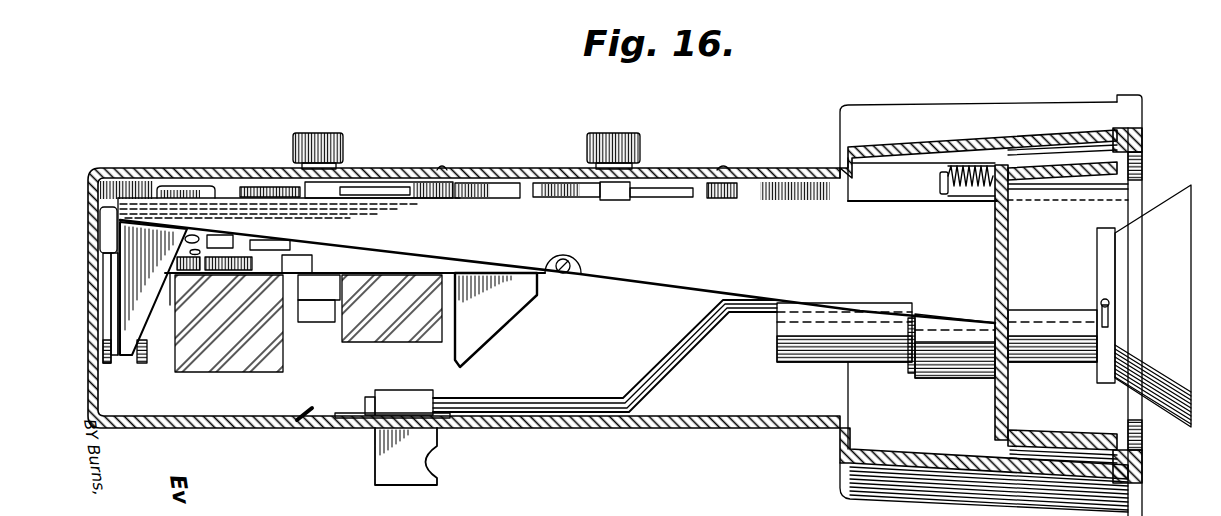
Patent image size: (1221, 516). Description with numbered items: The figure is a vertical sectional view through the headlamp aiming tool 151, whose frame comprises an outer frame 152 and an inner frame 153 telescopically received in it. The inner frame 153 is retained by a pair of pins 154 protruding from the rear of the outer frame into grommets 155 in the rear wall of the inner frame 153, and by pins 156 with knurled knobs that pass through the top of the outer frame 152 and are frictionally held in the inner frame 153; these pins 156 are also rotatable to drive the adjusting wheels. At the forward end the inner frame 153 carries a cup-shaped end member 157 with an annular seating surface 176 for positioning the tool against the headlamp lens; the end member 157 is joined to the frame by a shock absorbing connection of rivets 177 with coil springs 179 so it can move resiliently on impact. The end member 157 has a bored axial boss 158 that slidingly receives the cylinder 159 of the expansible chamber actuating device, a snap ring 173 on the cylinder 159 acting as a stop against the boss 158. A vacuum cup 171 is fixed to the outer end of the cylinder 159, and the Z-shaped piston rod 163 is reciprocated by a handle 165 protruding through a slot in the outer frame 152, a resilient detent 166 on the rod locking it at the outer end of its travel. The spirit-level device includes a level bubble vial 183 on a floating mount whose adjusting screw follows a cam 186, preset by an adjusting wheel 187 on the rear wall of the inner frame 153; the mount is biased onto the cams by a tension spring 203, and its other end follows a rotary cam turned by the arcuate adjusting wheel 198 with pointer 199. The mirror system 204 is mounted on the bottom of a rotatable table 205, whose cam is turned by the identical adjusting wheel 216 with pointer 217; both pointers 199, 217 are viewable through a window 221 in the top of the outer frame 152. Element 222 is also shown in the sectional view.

The headlamp aiming tool 151 is at (733, 140).
The outer frame 152 is at (572, 431).
The inner frame 153 is at (896, 268).
The pins 154 is at (94, 226).
The grommets 155 is at (105, 206).
The pins 156 is at (331, 133).
The cup-shaped end member 157 is at (1140, 172).
The bored axial boss 158 is at (967, 380).
The cylinder 159 is at (825, 364).
The piston rod 163 is at (605, 333).
The handle 165 is at (410, 488).
The resilient detent 166 is at (305, 411).
The vacuum cup 171 is at (1172, 425).
The snap ring 173 is at (909, 366).
The annular seating surface 176 is at (1143, 149).
The rivets 177 is at (944, 184).
The coil springs 179 is at (965, 157).
The level bubble vial 183 is at (175, 186).
The cam 186 is at (143, 366).
The adjusting wheel 187 is at (107, 365).
The arcuate adjusting wheel 198 is at (250, 186).
The pointer 199 is at (370, 183).
The tension spring 203 is at (228, 233).
The mirror system 204 is at (288, 357).
The table 205 is at (345, 262).
The arcuate adjusting wheel 216 is at (545, 183).
The pointer 217 is at (700, 170).
The window 221 is at (420, 187).
The housing top 222 is at (737, 181).